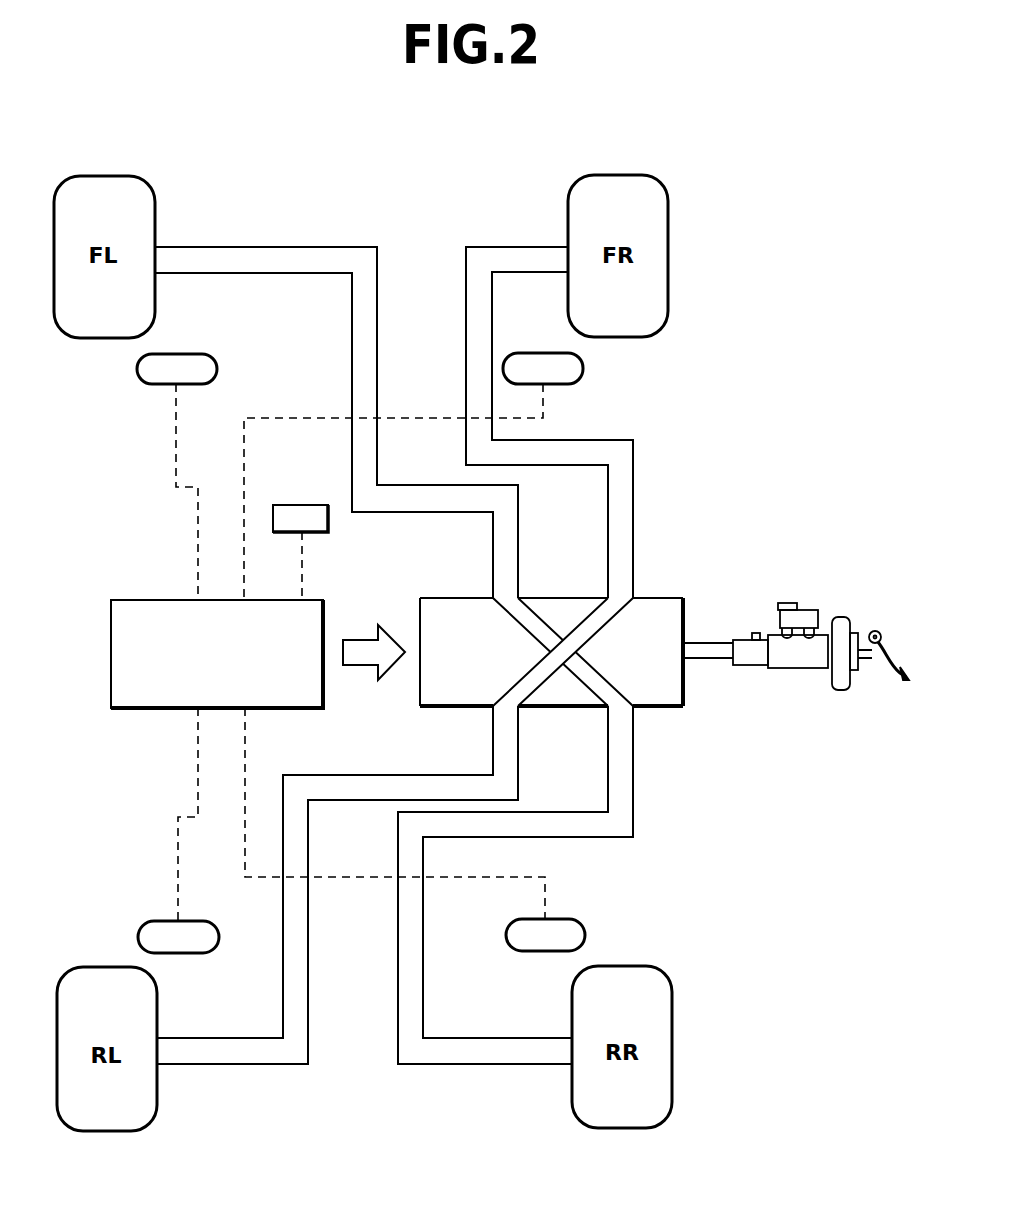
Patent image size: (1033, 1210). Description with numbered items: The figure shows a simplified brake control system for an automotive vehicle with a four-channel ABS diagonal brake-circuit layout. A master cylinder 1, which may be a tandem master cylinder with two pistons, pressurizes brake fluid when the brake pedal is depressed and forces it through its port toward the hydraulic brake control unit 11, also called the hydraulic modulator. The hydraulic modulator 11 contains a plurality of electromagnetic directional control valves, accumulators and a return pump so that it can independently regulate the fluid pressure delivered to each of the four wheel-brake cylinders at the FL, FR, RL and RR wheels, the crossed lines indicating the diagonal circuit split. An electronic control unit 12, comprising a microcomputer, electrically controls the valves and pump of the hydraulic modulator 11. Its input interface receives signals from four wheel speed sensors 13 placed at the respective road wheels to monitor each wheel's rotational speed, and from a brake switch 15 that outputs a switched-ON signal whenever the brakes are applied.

The master cylinder 1 is at (797, 668).
The hydraulic brake control unit 11 is at (674, 598).
The electronic control unit 12 is at (140, 599).
The wheel speed sensor 13 is at (140, 383).
The brake switch 15 is at (303, 505).